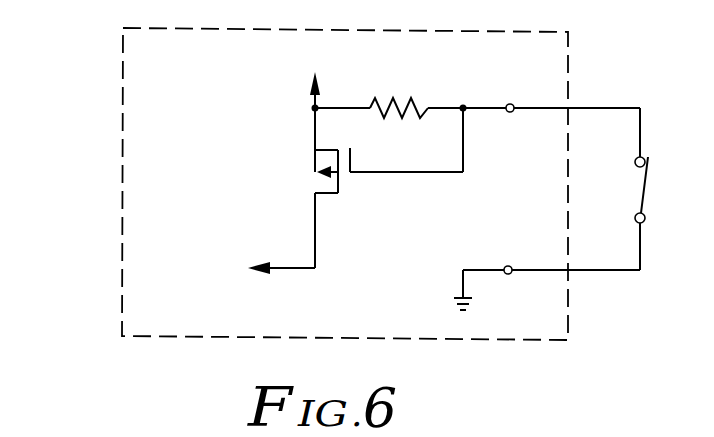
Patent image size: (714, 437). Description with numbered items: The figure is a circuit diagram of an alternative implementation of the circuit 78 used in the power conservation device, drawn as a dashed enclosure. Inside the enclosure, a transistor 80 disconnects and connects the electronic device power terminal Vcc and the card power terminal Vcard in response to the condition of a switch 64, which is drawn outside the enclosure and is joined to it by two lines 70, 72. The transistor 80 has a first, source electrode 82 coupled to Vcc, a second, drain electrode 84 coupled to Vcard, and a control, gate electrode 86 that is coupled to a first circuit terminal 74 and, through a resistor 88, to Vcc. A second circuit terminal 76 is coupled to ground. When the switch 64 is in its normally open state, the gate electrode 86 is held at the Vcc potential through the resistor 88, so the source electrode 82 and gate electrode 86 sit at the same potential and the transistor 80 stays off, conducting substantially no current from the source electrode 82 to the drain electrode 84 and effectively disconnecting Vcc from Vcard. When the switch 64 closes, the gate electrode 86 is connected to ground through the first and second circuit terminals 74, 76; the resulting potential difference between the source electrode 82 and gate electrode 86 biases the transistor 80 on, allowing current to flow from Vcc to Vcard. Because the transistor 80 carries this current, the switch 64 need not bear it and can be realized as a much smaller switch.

The switch 64 is at (648, 186).
The first line 70 is at (608, 106).
The second line 72 is at (613, 272).
The first circuit terminal 74 is at (513, 112).
The second circuit terminal 76 is at (510, 265).
The circuit 78 is at (110, 173).
The transistor 80 is at (339, 193).
The source electrode 82 is at (311, 94).
The drain electrode 84 is at (295, 268).
The gate electrode 86 is at (435, 174).
The resistor 88 is at (393, 98).